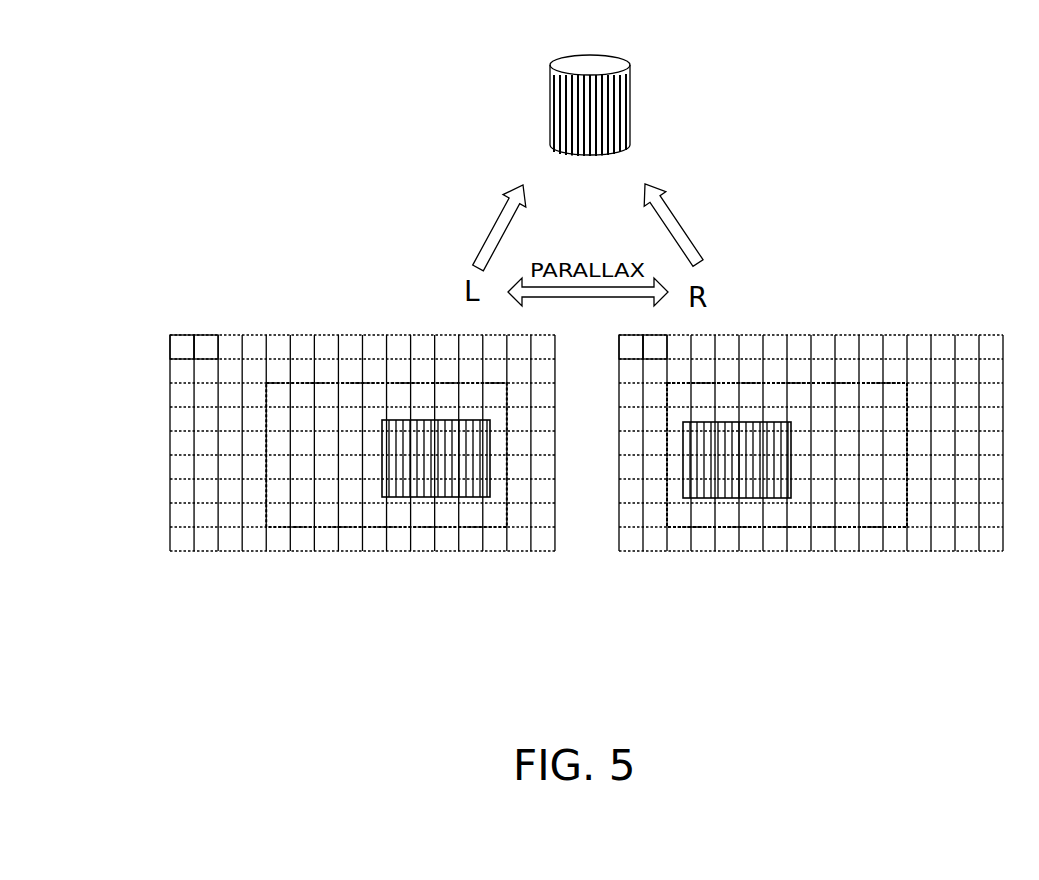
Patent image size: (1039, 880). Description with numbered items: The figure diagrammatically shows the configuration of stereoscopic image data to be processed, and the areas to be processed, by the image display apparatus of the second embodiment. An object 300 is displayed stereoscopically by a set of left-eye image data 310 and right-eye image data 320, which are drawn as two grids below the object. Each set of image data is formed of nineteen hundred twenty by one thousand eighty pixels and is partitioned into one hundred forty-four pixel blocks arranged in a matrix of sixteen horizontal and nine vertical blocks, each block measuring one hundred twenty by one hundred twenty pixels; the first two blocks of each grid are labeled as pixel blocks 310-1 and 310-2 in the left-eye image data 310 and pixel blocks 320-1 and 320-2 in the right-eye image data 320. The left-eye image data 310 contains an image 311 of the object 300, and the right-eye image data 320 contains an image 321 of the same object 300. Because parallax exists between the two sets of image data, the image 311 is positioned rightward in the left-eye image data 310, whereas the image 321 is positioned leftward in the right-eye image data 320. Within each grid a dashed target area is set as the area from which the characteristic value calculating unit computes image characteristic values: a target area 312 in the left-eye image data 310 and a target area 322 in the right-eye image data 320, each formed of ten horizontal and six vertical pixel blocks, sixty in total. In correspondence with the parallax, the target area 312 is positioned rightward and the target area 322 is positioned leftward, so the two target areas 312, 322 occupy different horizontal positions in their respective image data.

The object 300 is at (633, 102).
The left-eye image data 310 is at (358, 310).
The pixel block 310-1 is at (183, 336).
The pixel block 310-2 is at (205, 336).
The image 311 is at (427, 500).
The target area 312 is at (329, 383).
The right-eye image data 320 is at (939, 313).
The pixel block 320-1 is at (633, 336).
The pixel block 320-2 is at (655, 336).
The image 321 is at (735, 500).
The target area 322 is at (848, 383).